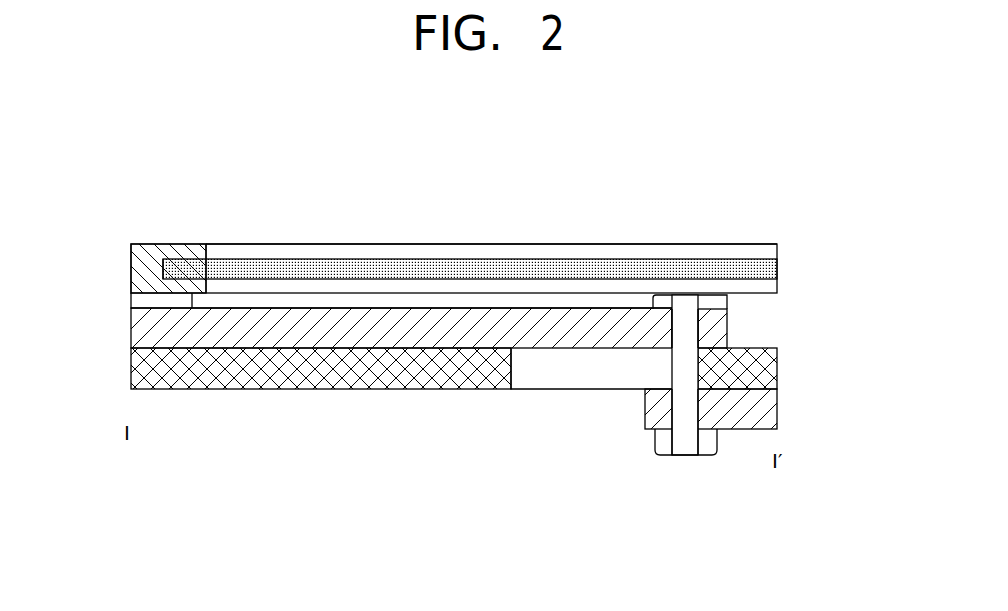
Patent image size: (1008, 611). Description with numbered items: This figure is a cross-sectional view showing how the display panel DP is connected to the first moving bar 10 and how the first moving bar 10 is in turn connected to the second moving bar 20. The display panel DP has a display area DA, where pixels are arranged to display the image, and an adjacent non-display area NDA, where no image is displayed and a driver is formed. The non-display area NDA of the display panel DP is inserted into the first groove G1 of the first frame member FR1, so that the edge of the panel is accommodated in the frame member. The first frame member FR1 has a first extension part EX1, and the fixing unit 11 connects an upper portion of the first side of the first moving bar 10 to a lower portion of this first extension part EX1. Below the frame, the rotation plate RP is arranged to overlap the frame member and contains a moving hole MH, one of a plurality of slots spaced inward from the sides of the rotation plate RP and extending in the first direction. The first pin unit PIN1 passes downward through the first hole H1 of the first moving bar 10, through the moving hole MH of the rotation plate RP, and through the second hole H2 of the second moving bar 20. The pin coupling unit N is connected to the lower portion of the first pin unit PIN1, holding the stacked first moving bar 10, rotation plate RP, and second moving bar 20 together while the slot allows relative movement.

The display panel DP is at (770, 268).
The display area DA is at (387, 262).
The non-display area NDA is at (188, 272).
The first frame member FR1 is at (492, 244).
The first extension part EX1 is at (131, 267).
The first groove G1 is at (168, 268).
The fixing unit 11 is at (143, 299).
The first moving bar 10 is at (143, 328).
The rotation plate RP is at (770, 371).
The moving hole MH is at (545, 376).
The second moving bar 20 is at (770, 410).
The first pin unit PIN1 is at (705, 303).
The first hole H1 is at (667, 327).
The second hole H2 is at (667, 410).
The pin coupling unit N is at (688, 456).